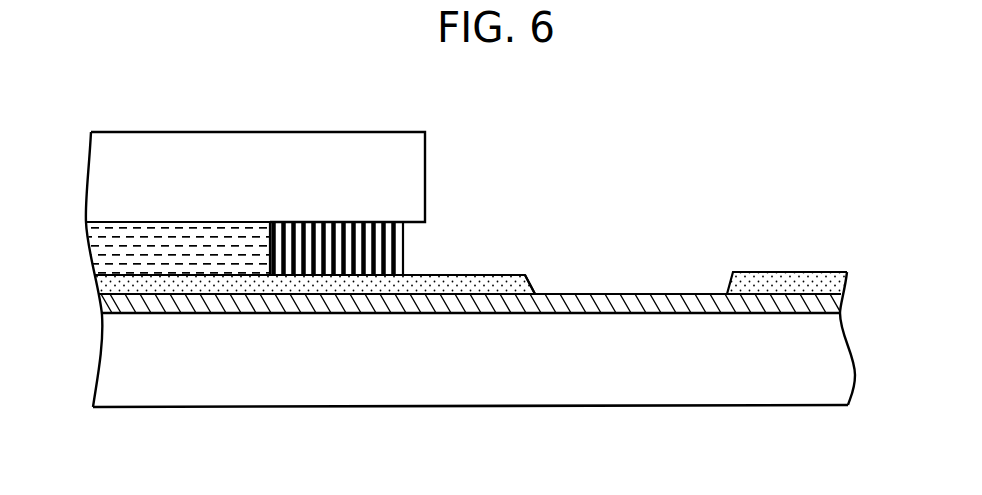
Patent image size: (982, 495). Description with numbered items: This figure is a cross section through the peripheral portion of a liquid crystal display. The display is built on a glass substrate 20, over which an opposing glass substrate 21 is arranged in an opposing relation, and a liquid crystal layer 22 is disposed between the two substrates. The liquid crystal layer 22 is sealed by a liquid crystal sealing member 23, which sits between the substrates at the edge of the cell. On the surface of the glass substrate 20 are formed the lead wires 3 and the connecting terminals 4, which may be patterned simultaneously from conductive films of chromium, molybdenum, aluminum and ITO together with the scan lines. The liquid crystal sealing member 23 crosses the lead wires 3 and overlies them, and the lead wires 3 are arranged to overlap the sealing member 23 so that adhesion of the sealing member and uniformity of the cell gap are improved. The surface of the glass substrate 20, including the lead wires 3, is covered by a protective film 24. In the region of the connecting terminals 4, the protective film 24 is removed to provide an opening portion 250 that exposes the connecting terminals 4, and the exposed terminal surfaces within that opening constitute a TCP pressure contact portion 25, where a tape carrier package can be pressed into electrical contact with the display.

The glass substrate 20 is at (545, 393).
The opposing glass substrate 21 is at (250, 152).
The liquid crystal layer 22 is at (152, 250).
The liquid crystal sealing member 23 is at (397, 255).
The protective film 24 is at (188, 286).
The TCP pressure contact portion 25 is at (641, 284).
The opening portion 250 is at (537, 282).
The lead wire 3 is at (327, 303).
The connecting terminal 4 is at (674, 303).